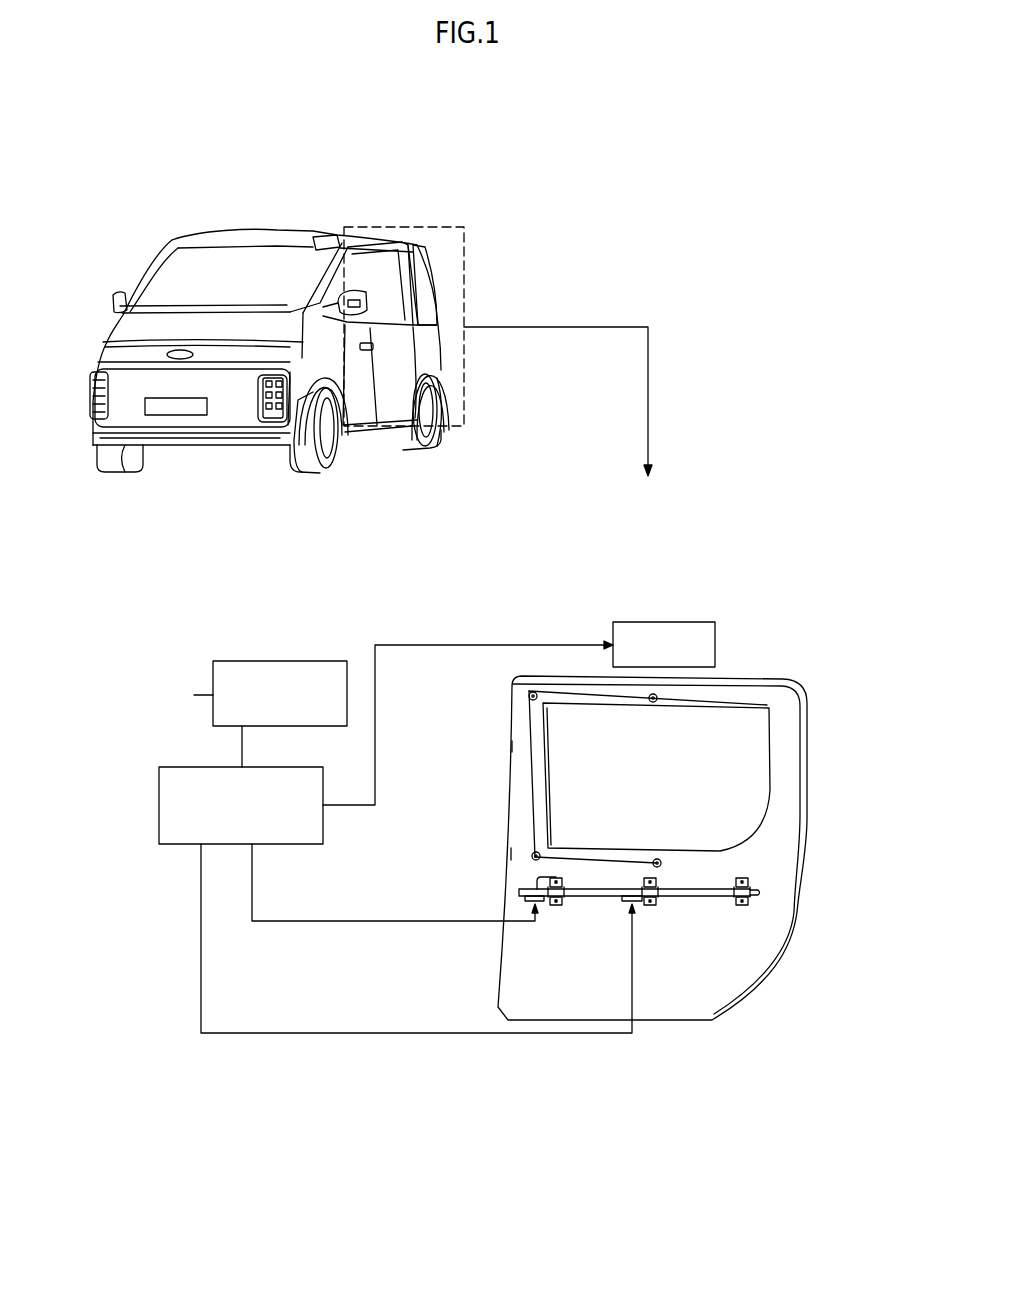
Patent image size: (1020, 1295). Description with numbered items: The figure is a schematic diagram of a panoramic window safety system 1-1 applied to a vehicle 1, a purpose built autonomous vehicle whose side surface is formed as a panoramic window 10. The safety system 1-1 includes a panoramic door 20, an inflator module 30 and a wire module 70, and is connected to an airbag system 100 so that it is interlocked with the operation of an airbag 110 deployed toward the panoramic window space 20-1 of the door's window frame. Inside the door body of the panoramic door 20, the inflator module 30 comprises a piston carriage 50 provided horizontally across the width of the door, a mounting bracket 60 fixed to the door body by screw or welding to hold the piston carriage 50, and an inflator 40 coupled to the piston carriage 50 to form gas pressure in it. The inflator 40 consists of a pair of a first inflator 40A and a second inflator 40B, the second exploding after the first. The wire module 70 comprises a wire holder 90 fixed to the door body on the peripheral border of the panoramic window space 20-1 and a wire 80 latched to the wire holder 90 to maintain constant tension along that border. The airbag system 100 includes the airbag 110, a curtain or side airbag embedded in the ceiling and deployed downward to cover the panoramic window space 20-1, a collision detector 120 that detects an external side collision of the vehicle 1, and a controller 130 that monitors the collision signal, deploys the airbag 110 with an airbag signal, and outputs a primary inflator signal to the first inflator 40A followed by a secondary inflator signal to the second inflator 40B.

The vehicle 1 is at (213, 243).
The panoramic window safety system 1-1 is at (463, 140).
The panoramic window 10 is at (373, 268).
The panoramic door 20 is at (395, 358).
The panoramic window space 20-1 is at (748, 749).
The inflator module 30 is at (665, 1005).
The inflator 40 is at (600, 1098).
The first inflator 40A is at (540, 900).
The second inflator 40B is at (623, 901).
The piston carriage 50 is at (757, 888).
The mounting bracket 60 is at (745, 905).
The wire module 70 is at (428, 737).
The wire 80 is at (529, 747).
The wire holder 90 is at (515, 857).
The airbag system 100 is at (389, 770).
The airbag 110 is at (655, 620).
The collision detector 120 is at (238, 661).
The controller 130 is at (159, 805).